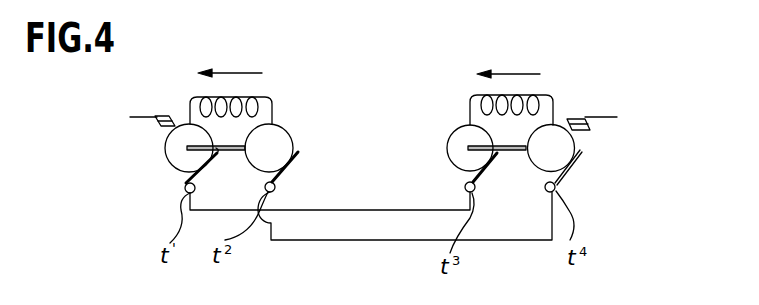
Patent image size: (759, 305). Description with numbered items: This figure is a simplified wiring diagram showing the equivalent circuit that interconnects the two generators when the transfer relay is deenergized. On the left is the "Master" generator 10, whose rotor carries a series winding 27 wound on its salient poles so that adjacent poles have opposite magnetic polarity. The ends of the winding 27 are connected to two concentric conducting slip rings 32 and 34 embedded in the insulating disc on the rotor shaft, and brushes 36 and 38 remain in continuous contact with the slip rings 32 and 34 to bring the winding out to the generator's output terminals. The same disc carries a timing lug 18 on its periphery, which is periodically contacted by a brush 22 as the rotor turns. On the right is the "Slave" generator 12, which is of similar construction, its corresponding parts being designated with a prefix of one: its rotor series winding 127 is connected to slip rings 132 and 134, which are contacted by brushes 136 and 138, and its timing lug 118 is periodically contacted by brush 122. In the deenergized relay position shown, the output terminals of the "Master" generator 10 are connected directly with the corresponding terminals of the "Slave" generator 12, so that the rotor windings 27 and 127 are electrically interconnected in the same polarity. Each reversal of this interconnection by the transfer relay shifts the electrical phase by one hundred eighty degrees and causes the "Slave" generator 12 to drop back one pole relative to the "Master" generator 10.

The "Master" generator 10 is at (239, 197).
The "Slave" generator 12 is at (521, 197).
The timing lug 18 is at (166, 135).
The brush 22 is at (171, 115).
The series winding 27 is at (250, 98).
The slip ring 32 is at (170, 160).
The slip ring 34 is at (283, 141).
The brush 36 is at (188, 177).
The brush 38 is at (283, 182).
The timing lug 118 is at (576, 133).
The brush 122 is at (580, 118).
The series winding 127 is at (518, 107).
The slip ring 132 is at (448, 142).
The slip ring 134 is at (541, 168).
The brush 136 is at (468, 176).
The brush 138 is at (567, 170).